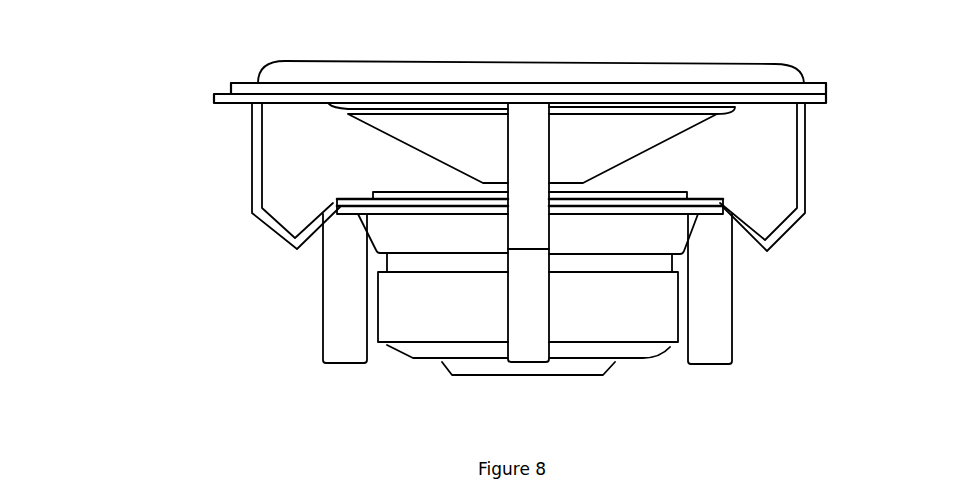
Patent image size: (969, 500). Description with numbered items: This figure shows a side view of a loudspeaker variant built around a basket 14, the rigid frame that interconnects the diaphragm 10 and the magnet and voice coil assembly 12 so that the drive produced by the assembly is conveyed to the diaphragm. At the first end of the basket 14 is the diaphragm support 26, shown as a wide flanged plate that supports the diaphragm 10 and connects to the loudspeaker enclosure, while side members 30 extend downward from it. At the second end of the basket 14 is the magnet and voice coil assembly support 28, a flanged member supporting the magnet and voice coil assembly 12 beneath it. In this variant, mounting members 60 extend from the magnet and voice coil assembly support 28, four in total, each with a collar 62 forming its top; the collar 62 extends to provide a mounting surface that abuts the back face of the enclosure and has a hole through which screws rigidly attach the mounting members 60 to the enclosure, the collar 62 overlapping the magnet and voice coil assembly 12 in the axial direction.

The diaphragm 10 is at (605, 137).
The magnet and voice coil assembly 12 is at (458, 303).
The basket 14 is at (90, 130).
The diaphragm support 26 is at (287, 104).
The magnet and voice coil assembly support 28 is at (350, 195).
The clip arm 30 is at (813, 182).
The mounting members 60 is at (343, 325).
The collar 62 is at (717, 337).